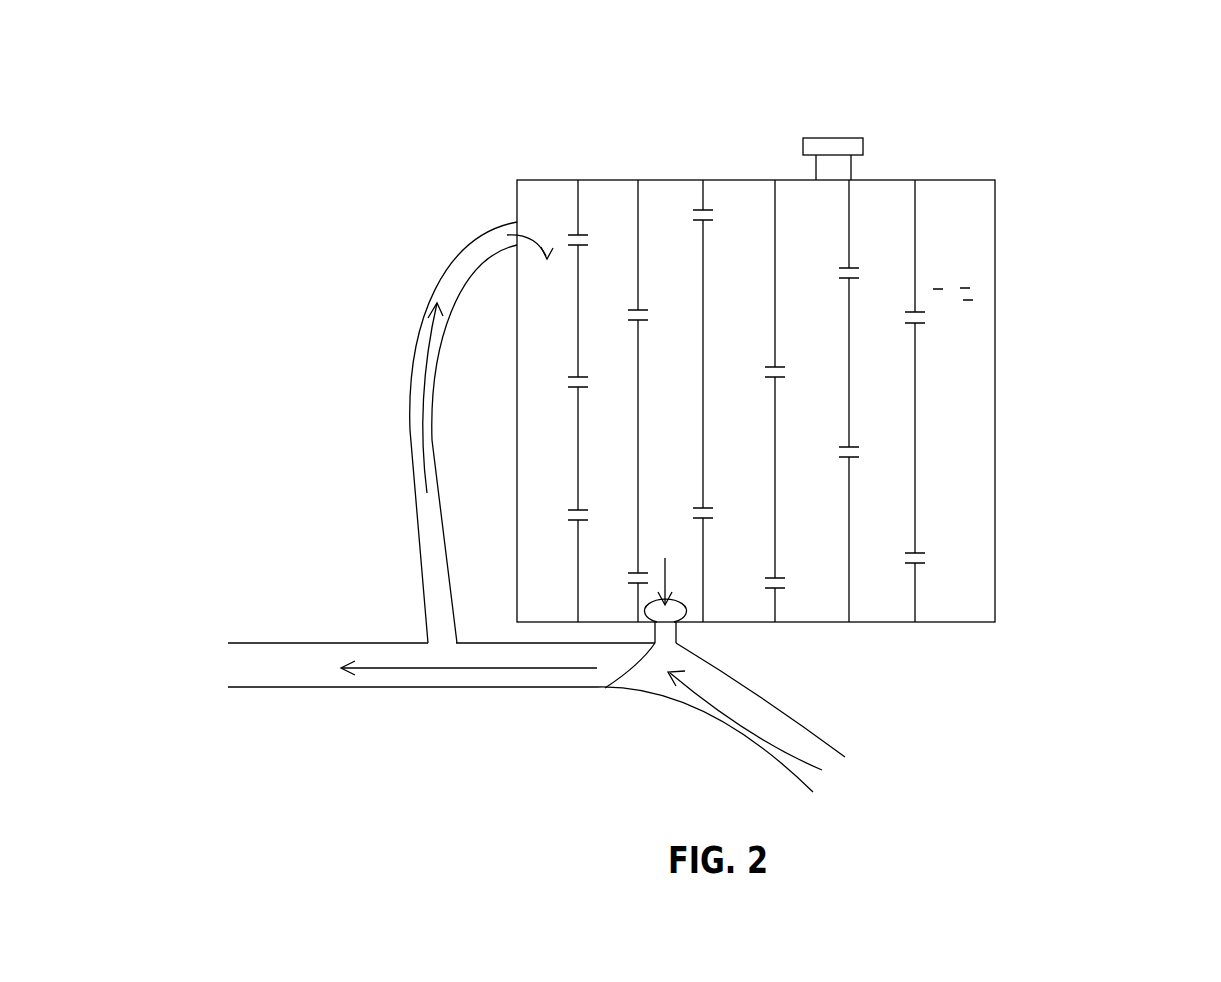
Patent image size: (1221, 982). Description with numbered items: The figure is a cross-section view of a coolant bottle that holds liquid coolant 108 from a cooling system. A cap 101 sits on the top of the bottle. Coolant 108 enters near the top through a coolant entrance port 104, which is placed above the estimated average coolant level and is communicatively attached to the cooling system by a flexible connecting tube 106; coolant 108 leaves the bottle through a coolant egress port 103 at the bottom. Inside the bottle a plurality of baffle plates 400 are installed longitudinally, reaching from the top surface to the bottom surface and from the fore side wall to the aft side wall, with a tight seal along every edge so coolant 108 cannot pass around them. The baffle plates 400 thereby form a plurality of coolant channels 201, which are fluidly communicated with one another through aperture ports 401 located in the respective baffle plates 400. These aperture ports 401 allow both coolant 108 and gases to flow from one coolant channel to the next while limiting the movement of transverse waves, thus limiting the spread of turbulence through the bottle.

The cap 101 is at (849, 131).
The coolant egress port 103 is at (653, 643).
The coolant entrance port 104 is at (524, 221).
The connecting tube 106 is at (409, 386).
The coolant 108 is at (961, 335).
The coolant channels 201 is at (954, 207).
The baffle plates 400 is at (856, 402).
The aperture ports 401 is at (926, 559).